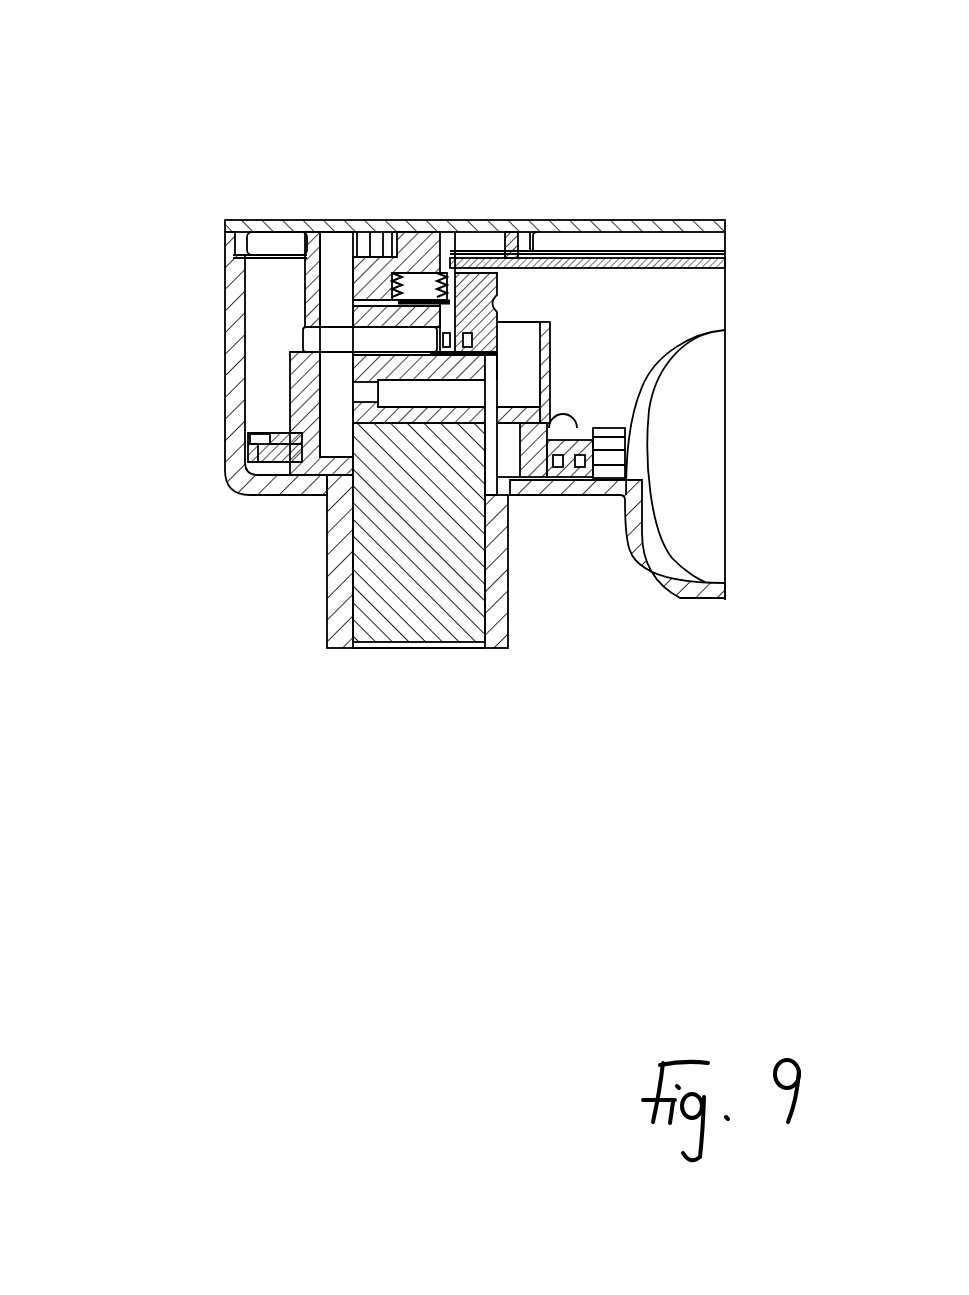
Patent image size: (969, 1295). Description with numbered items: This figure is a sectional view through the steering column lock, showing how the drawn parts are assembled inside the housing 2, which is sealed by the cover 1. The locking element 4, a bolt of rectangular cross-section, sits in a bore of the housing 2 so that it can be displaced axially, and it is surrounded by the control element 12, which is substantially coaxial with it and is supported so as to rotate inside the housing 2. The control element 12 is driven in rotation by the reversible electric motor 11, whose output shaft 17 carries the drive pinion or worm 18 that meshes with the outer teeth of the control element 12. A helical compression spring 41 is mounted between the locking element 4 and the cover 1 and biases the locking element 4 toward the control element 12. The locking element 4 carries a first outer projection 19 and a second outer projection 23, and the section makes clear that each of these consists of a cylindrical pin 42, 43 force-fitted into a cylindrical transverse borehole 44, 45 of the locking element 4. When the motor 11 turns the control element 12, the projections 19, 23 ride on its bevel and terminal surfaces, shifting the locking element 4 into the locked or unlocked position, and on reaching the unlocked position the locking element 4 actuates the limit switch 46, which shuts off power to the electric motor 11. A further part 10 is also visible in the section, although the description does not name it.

The cover 1 is at (285, 220).
The housing 2 is at (236, 302).
The locking element 4 is at (405, 503).
The valve body bore 10 is at (423, 620).
The electric motor 11 is at (712, 523).
The control element 12 is at (413, 423).
The output shaft 17 is at (607, 450).
The drive pinion or worm 18 is at (573, 397).
The first outer projection 19 is at (317, 341).
The second outer projection 23 is at (498, 396).
The helical compression spring 41 is at (452, 300).
The cylindrical pin 42 is at (370, 340).
The cylindrical pin 43 is at (307, 410).
The cylindrical transverse borehole 44 is at (418, 312).
The cylindrical transverse borehole 45 is at (370, 390).
The limit switch 46 is at (505, 300).